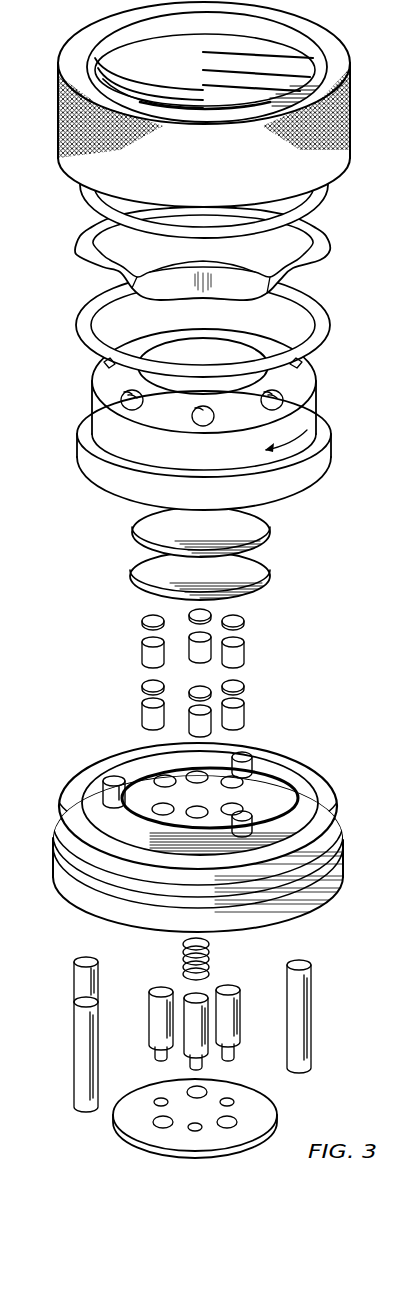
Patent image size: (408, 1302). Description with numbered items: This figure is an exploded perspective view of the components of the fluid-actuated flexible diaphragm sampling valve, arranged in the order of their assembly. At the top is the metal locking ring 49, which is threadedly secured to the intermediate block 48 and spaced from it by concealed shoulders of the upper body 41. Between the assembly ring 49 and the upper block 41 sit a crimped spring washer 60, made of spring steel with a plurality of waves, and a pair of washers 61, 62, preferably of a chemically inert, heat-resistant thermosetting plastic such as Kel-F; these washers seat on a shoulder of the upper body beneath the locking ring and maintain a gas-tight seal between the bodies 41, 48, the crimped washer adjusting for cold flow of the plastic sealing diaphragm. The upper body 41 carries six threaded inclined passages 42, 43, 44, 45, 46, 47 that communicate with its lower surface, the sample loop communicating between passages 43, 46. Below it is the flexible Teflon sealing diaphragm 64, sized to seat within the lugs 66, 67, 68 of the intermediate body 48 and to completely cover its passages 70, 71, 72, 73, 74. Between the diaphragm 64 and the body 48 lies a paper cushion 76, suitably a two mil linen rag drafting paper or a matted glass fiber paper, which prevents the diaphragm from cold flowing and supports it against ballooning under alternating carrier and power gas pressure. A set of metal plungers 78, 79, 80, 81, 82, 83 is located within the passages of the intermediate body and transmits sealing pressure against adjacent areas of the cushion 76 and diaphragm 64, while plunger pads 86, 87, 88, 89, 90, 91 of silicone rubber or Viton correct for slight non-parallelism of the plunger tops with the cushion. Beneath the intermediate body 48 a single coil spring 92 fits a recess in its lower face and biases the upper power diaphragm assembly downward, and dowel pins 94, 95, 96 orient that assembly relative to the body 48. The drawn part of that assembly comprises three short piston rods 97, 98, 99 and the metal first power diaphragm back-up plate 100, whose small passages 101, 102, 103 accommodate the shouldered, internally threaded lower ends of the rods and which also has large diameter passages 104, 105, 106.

The locking ring 49 is at (58, 154).
The washer 61 is at (82, 195).
The crimped spring washer 60 is at (83, 240).
The washer 62 is at (88, 320).
The threaded inclined passage 45 is at (203, 340).
The threaded inclined passage 44 is at (104, 363).
The threaded inclined passage 46 is at (302, 364).
The threaded inclined passage 43 is at (122, 397).
The threaded inclined passage 42 is at (208, 423).
The threaded inclined passage 47 is at (283, 398).
The upper body 41 is at (199, 409).
The sealing diaphragm 64 is at (133, 528).
The paper cushion 76 is at (133, 570).
The metal plunger 81 is at (190, 640).
The plunger pad 89 is at (210, 614).
The plunger pad 88 is at (142, 621).
The plunger pad 90 is at (244, 622).
The metal plunger 80 is at (142, 645).
The metal plunger 82 is at (244, 653).
The plunger pad 87 is at (142, 687).
The plunger pad 86 is at (208, 690).
The plunger pad 91 is at (244, 688).
The metal plunger 79 is at (142, 712).
The metal plunger 78 is at (188, 728).
The metal plunger 83 is at (244, 712).
The passage 72 is at (193, 772).
The passage 71 is at (156, 774).
The lug 68 is at (248, 755).
The passage 73 is at (246, 785).
The passage 74 is at (267, 790).
The lug 67 is at (103, 787).
The passage 70 is at (67, 803).
The lug 66 is at (252, 810).
The intermediate block 48 is at (201, 827).
The dowel pin 95 is at (82, 973).
The dowel pin 94 is at (78, 1072).
The dowel pin 96 is at (308, 975).
The coil spring 92 is at (208, 940).
The piston rod 97 is at (157, 990).
The piston rod 99 is at (188, 997).
The piston rod 98 is at (221, 987).
The first power diaphragm back-up plate 100 is at (173, 1107).
The small passage 102 is at (161, 1097).
The large diameter passage 105 is at (208, 1088).
The small passage 103 is at (234, 1102).
The large diameter passage 104 is at (153, 1120).
The small passage 101 is at (190, 1128).
The large diameter passage 106 is at (240, 1124).